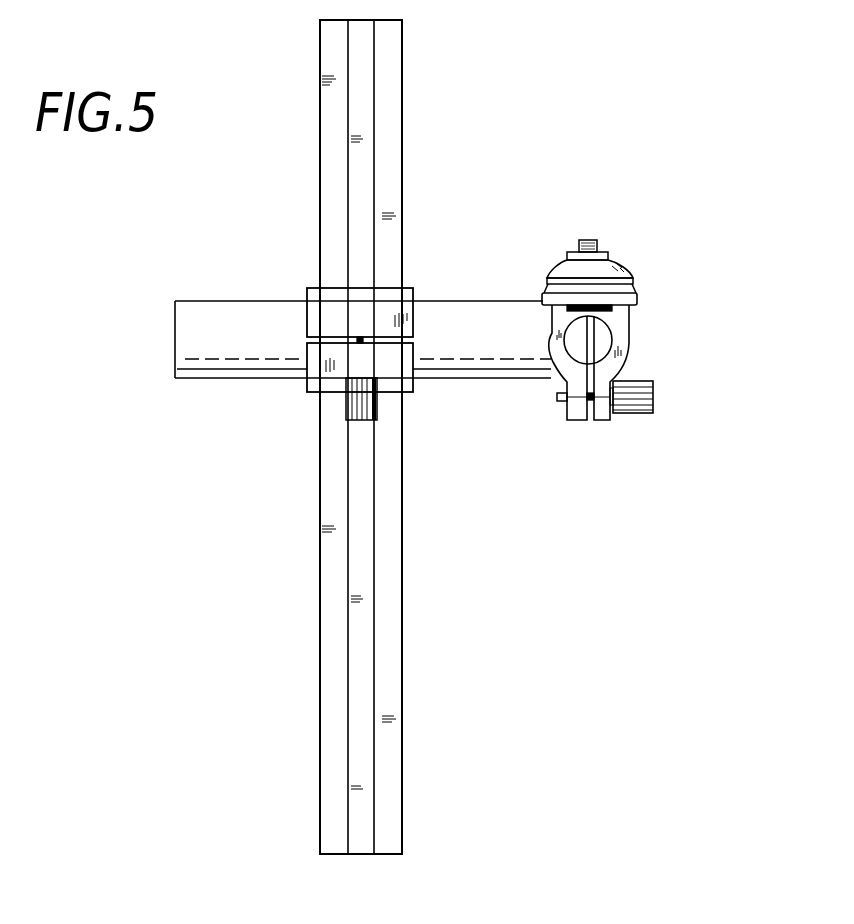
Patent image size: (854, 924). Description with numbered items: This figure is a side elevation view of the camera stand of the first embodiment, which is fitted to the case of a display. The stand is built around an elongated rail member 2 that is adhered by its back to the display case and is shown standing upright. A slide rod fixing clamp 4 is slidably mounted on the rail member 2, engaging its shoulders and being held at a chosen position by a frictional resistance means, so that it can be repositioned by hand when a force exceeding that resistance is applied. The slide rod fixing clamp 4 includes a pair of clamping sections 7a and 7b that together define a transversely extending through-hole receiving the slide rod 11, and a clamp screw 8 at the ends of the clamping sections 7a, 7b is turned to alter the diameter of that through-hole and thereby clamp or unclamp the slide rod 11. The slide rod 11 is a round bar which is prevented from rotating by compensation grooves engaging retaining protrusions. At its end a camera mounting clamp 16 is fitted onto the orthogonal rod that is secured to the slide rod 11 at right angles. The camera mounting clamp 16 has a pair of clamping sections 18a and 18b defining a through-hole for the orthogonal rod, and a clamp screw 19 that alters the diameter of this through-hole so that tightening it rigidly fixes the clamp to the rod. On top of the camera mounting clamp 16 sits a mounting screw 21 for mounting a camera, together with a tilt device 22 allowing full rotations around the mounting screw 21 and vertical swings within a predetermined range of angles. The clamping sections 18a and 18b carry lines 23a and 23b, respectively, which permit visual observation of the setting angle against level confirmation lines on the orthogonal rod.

The rail member 2 is at (388, 60).
The slide rod fixing clamp 4 is at (322, 335).
The clamping section 7a is at (322, 320).
The clamping section 7b is at (405, 358).
The clamp screw 8 is at (357, 405).
The slide rod 11 is at (235, 323).
The camera mounting clamp 16 is at (610, 357).
The clamping section 18a is at (603, 413).
The clamping section 18b is at (578, 410).
The clamp screw 19 is at (653, 392).
The mounting screw 21 is at (590, 240).
The tilt device 22 is at (612, 270).
The line 23a is at (632, 342).
The line 23b is at (547, 338).